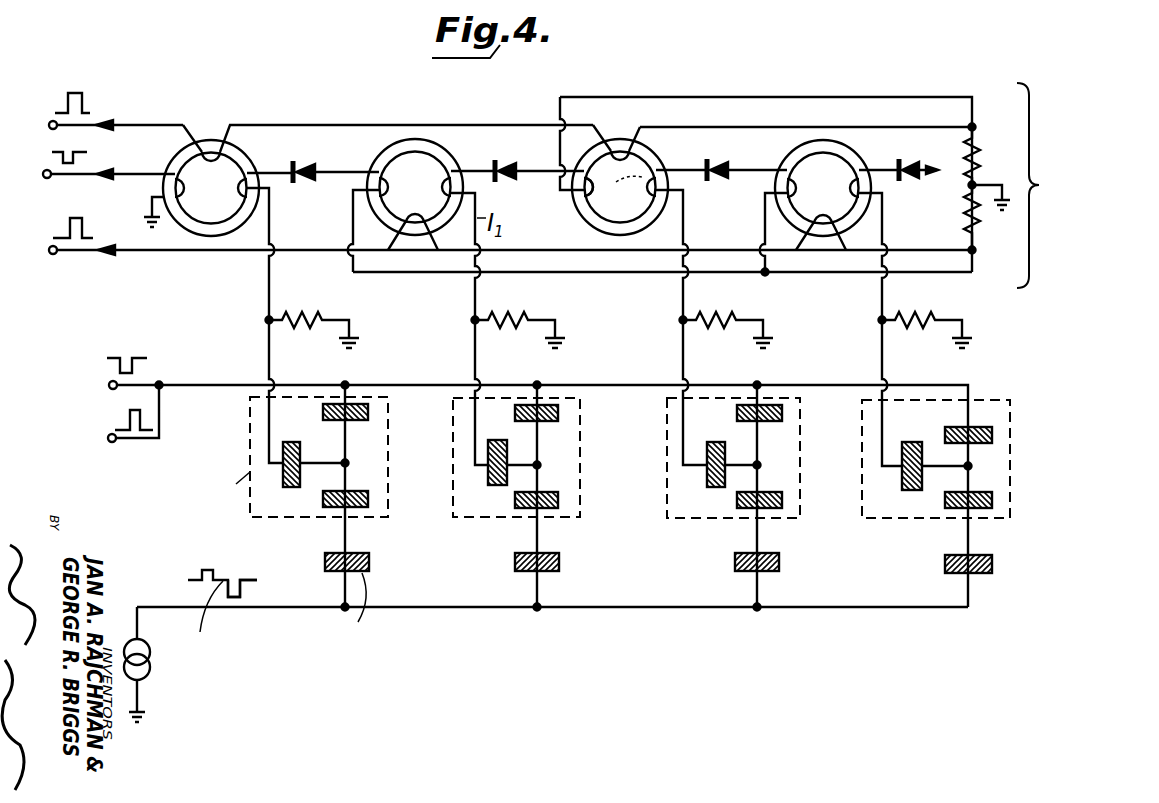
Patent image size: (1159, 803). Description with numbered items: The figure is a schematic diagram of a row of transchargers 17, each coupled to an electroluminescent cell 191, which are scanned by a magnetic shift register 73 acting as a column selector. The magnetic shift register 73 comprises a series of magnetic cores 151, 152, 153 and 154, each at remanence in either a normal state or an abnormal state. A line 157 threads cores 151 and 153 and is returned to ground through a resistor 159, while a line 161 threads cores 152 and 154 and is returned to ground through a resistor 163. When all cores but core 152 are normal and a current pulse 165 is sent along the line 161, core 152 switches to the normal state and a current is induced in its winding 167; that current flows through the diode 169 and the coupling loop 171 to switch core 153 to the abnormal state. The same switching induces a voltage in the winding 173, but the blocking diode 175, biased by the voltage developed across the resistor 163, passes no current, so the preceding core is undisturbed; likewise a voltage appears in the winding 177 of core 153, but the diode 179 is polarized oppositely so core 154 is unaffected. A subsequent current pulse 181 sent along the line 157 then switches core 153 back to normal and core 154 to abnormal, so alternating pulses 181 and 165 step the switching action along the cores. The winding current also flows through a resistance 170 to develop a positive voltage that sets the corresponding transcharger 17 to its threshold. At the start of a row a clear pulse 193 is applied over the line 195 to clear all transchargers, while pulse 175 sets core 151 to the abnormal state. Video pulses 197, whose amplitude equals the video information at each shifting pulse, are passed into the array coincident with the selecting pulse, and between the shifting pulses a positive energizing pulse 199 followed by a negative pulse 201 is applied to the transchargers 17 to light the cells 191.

The transcharger 17 is at (250, 497).
The magnetic shift register 73 is at (852, 185).
The magnetic core 151 is at (214, 145).
The magnetic core 152 is at (418, 147).
The magnetic core 153 is at (628, 128).
The magnetic core 154 is at (836, 124).
The line 157 is at (204, 151).
The resistor 159 is at (983, 158).
The line 161 is at (211, 262).
The resistor 163 is at (982, 227).
The current pulse 165 is at (65, 220).
The winding 167 is at (413, 213).
The diode 169 is at (507, 158).
The resistance 170 is at (310, 313).
The coupling loop 171 is at (590, 205).
The winding 173 is at (328, 162).
The blocking diode 175 is at (84, 150).
The winding 177 is at (622, 196).
The diode 179 is at (722, 140).
The current pulse 181 is at (76, 70).
The electroluminescent cell 191 is at (559, 563).
The clear pulse 193 is at (140, 418).
The line 195 is at (205, 386).
The video pulse 197 is at (151, 348).
The positive energizing pulse 199 is at (214, 566).
The negative pulse 201 is at (243, 590).